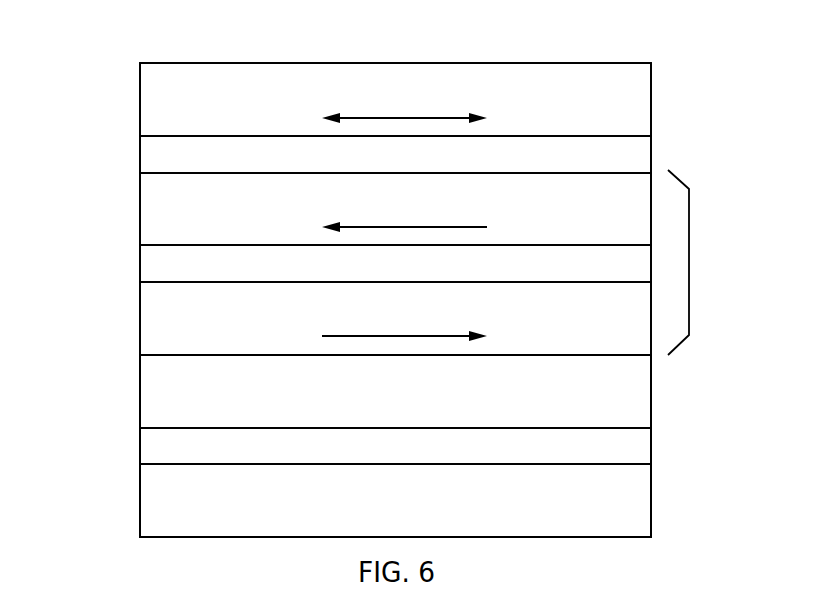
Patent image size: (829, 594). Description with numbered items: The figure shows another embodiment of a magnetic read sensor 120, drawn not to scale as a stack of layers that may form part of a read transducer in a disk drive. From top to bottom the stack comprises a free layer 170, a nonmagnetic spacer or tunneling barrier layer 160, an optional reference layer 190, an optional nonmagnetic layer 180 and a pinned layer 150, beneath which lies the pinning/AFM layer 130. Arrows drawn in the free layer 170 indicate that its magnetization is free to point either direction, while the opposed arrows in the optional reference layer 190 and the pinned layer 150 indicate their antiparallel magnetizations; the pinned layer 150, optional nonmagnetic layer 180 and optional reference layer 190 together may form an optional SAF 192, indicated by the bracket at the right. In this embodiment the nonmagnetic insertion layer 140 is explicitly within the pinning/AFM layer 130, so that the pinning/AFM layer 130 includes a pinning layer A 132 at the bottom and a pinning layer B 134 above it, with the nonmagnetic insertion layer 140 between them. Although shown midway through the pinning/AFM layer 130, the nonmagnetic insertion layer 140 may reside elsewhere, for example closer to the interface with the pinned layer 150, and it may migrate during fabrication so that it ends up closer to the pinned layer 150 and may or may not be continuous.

The magnetic read sensor 120 is at (118, 57).
The free layer 170 is at (395, 99).
The nonmagnetic spacer or tunneling barrier layer 160 is at (395, 154).
The optional reference layer 190 is at (395, 209).
The optional nonmagnetic layer 180 is at (395, 263).
The pinned layer 150 is at (395, 318).
The pinning layer B 134 is at (395, 391).
The nonmagnetic insertion layer 140 is at (395, 445).
The pinning layer A 132 is at (395, 500).
The optional SAF 192 is at (689, 263).
The pinning/AFM layer 130 is at (92, 426).